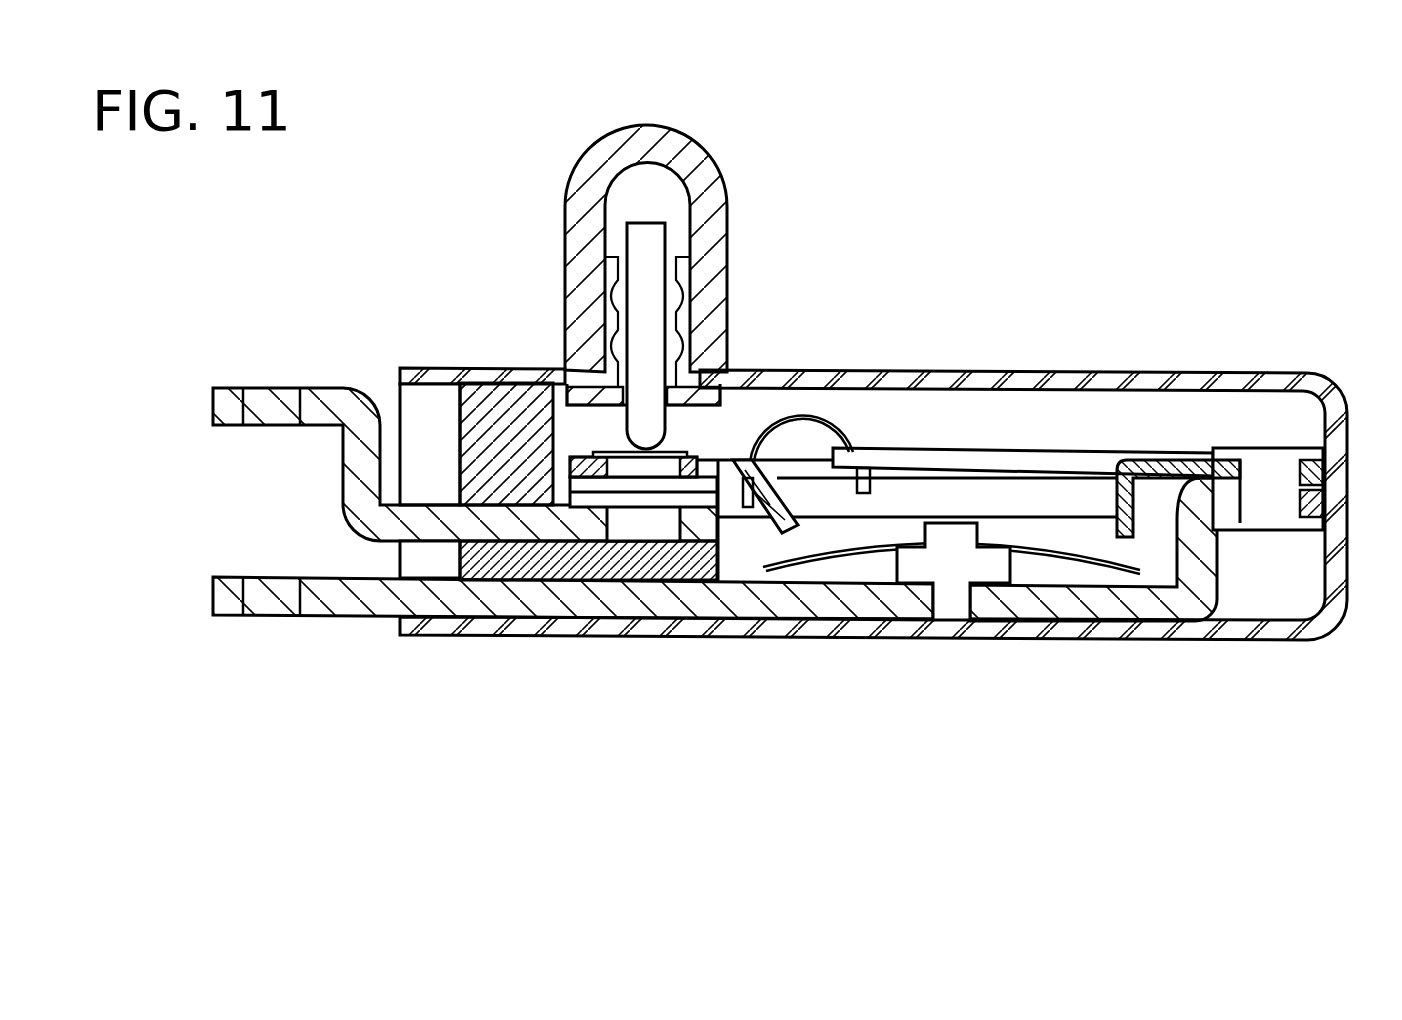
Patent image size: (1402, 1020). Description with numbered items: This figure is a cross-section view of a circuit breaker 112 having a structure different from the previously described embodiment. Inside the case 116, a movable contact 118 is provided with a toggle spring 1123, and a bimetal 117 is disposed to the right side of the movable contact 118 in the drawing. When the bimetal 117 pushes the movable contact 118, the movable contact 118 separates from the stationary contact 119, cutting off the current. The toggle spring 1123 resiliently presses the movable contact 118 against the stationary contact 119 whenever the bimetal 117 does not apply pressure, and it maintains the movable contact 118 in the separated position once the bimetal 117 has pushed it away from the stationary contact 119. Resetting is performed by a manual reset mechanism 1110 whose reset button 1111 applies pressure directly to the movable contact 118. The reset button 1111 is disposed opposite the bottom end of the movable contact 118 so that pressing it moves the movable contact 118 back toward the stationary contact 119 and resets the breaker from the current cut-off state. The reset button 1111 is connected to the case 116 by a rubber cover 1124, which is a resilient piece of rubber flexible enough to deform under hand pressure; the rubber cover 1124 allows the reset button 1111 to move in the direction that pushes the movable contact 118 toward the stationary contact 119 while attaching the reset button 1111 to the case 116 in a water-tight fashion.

The circuit breaker 112 is at (928, 243).
The case 116 is at (1103, 380).
The bimetal 117 is at (1047, 553).
The movable contact 118 is at (670, 467).
The stationary contact 119 is at (663, 523).
The manual reset mechanism 1110 is at (534, 228).
The reset button 1111 is at (637, 240).
The toggle spring 1123 is at (817, 418).
The rubber cover 1124 is at (750, 128).